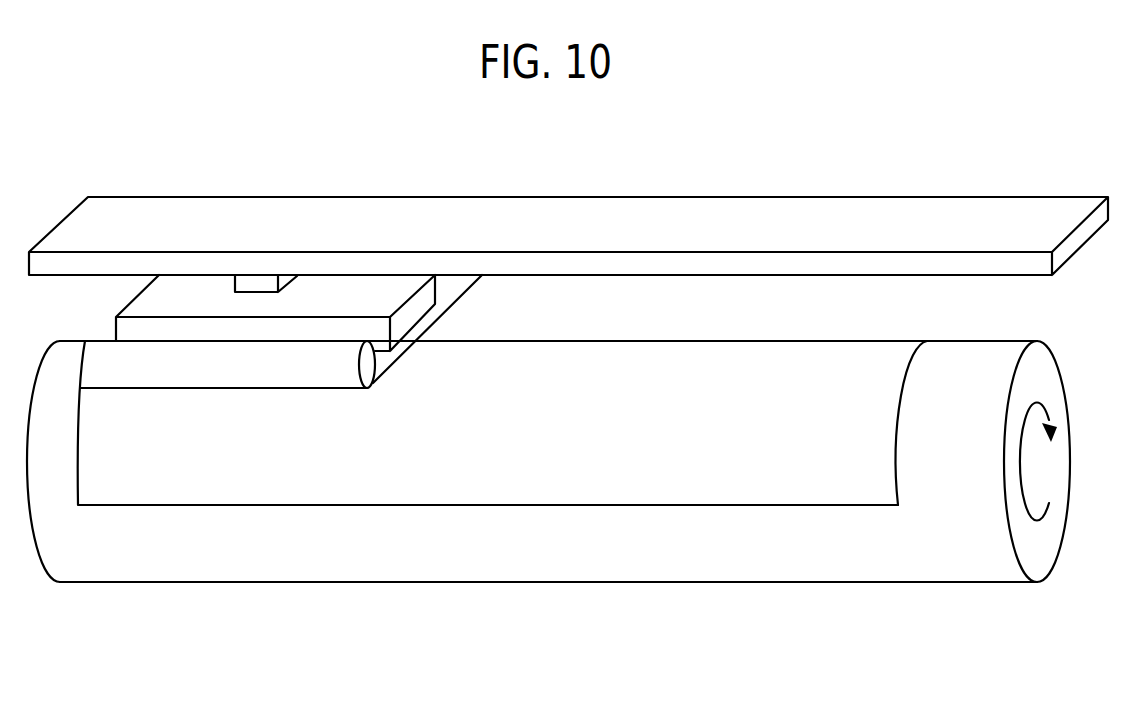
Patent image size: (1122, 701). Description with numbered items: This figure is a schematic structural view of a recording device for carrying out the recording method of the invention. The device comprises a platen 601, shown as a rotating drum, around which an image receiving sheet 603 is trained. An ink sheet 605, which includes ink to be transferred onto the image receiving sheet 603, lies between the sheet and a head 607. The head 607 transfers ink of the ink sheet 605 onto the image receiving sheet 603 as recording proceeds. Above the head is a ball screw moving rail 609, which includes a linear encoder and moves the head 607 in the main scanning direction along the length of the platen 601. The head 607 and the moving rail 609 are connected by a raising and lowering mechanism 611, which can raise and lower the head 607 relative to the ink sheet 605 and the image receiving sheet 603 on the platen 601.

The platen 601 is at (618, 582).
The image receiving sheet 603 is at (470, 505).
The ink sheet 605 is at (250, 388).
The head 607 is at (133, 300).
The ball screw moving rail 609 is at (357, 197).
The raising and lowering mechanism 611 is at (258, 293).